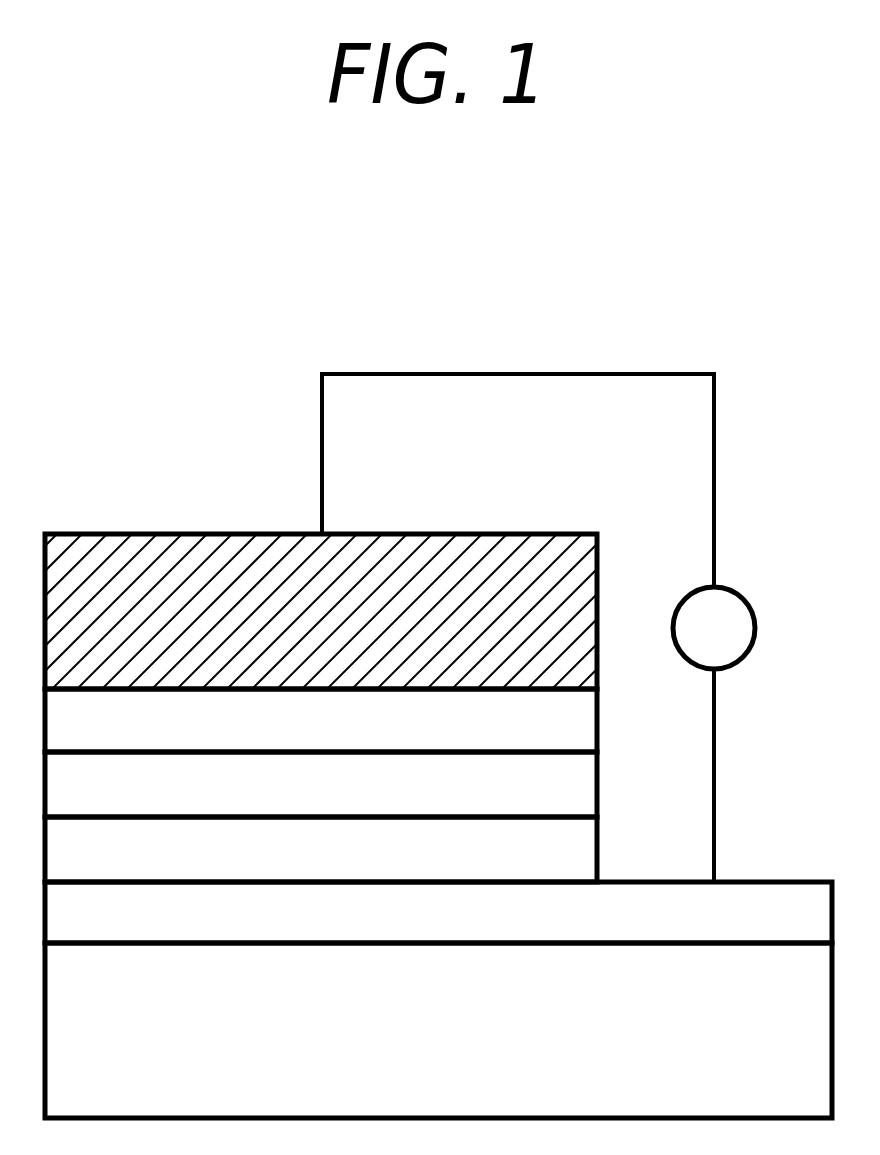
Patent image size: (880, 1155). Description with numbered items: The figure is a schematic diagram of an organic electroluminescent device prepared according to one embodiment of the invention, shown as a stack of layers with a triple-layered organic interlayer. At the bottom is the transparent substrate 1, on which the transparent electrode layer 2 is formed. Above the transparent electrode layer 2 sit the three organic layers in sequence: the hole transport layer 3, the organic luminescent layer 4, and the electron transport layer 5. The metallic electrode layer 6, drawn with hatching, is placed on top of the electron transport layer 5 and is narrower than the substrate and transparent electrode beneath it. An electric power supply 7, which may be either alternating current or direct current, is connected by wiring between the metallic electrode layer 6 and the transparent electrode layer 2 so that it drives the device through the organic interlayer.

The transparent substrate 1 is at (438, 1030).
The transparent electrode layer 2 is at (438, 912).
The hole transport layer 3 is at (321, 849).
The organic luminescent layer 4 is at (321, 785).
The electron transport layer 5 is at (321, 720).
The metallic electrode layer 6 is at (440, 577).
The electric power supply 7 is at (538, 628).